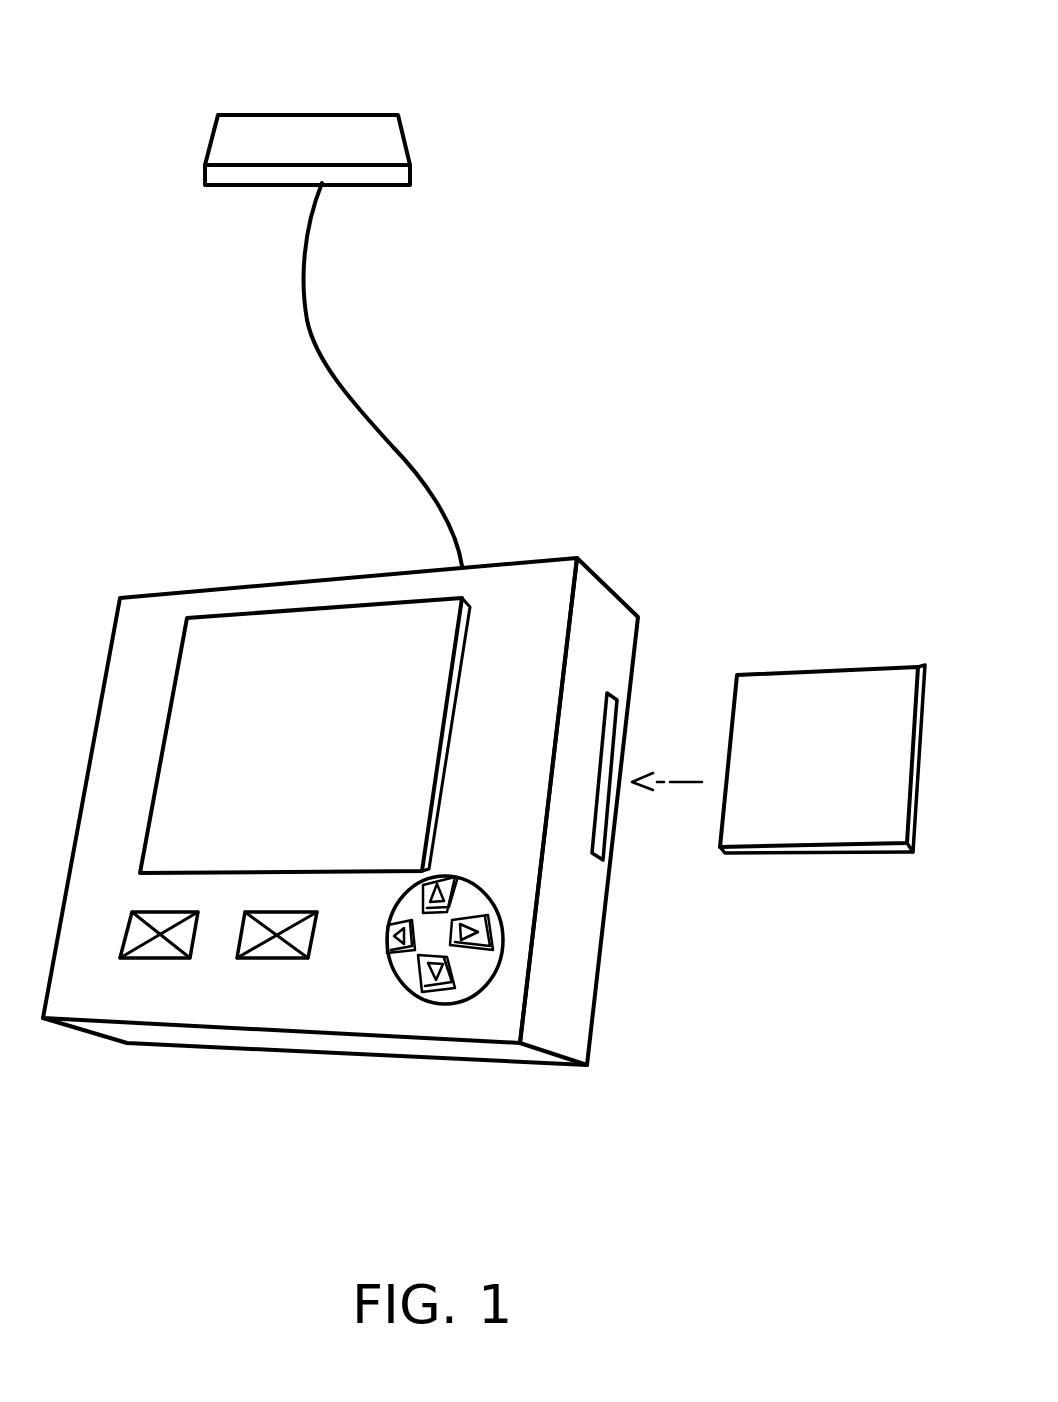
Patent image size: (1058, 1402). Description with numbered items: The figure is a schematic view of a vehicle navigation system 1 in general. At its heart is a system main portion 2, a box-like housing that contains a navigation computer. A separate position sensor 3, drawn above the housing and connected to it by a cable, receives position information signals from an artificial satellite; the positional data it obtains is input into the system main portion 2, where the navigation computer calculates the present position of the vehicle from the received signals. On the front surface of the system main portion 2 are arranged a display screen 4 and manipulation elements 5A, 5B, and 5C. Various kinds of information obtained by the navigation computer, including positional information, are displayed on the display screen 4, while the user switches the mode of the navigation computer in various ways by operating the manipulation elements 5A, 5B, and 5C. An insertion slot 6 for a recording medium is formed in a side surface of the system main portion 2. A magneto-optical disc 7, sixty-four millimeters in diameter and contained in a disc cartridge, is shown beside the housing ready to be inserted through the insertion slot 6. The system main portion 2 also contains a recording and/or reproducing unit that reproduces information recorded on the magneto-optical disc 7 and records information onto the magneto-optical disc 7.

The navigation system 1 is at (70, 45).
The system main portion 2 is at (150, 597).
The position sensor 3 is at (407, 140).
The display screen 4 is at (308, 612).
The manipulation element 5A is at (153, 960).
The manipulation element 5B is at (275, 960).
The manipulation element 5C is at (445, 1005).
The insertion slot 6 is at (618, 712).
The magneto-optical disc 7 is at (843, 673).